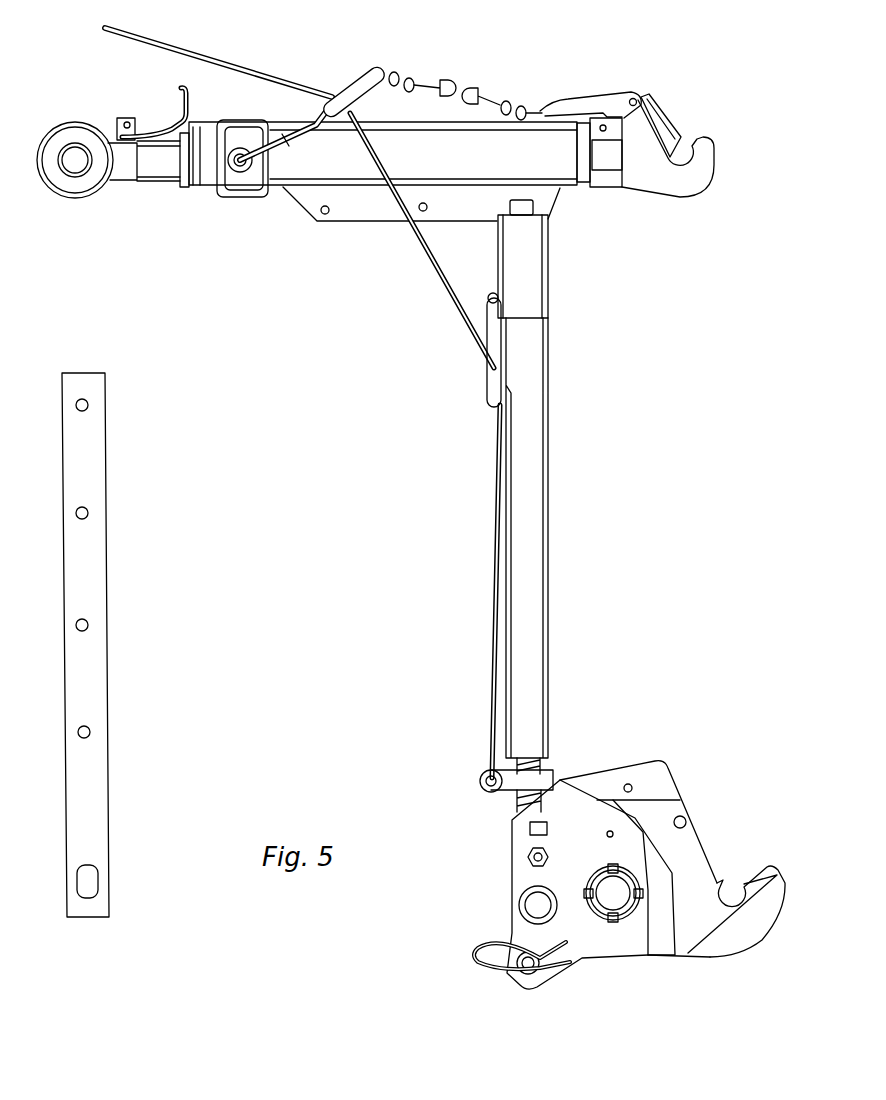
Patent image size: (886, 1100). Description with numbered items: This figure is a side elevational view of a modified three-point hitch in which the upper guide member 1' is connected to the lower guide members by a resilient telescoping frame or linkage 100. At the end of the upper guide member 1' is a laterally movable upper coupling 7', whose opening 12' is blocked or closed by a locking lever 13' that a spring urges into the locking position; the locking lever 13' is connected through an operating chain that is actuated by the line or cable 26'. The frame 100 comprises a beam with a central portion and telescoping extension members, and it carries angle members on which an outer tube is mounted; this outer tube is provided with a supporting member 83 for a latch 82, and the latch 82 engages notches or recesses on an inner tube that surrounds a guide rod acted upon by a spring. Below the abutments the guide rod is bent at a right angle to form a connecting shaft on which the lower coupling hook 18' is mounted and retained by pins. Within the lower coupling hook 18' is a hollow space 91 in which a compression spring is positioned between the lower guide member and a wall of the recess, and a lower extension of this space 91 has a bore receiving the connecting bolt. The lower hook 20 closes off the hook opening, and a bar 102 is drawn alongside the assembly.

The line or cable 26' is at (218, 53).
The upper guide member 1' is at (389, 128).
The upper coupling 7' is at (590, 114).
The locking lever 13' is at (673, 111).
The opening 12' is at (687, 142).
The supporting member 83 is at (497, 292).
The latch 82 is at (495, 372).
The resilient telescoping frame 100 is at (535, 463).
The mounting bar 102 is at (105, 550).
The lower coupling hook 18' is at (574, 852).
The hollow space 91 is at (682, 853).
The lower hook 20 is at (721, 881).